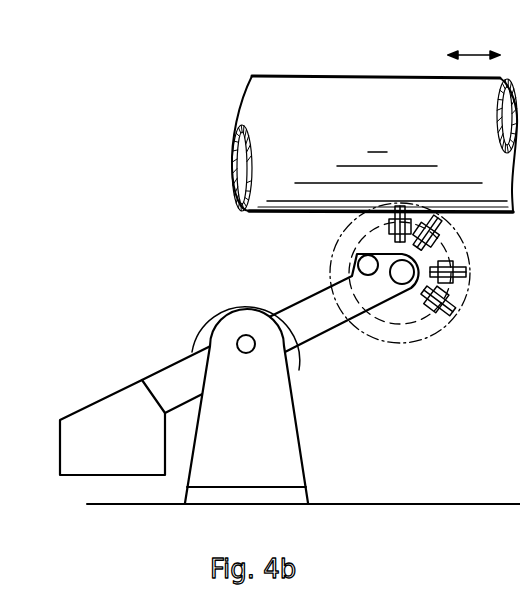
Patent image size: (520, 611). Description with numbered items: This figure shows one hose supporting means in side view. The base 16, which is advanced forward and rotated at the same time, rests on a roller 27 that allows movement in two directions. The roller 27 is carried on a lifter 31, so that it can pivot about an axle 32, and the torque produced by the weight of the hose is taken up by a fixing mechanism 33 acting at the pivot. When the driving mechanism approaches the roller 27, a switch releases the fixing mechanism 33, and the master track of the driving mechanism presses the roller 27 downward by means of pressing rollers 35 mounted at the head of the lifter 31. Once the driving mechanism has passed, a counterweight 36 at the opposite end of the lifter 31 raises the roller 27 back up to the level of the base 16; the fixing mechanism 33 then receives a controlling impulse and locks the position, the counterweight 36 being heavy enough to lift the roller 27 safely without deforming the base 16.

The base 16 is at (260, 115).
The roller 27 is at (448, 320).
The lifter 31 is at (329, 334).
The axle 32 is at (255, 344).
The fixing mechanism 33 is at (220, 303).
The pressing rollers 35 is at (358, 259).
The counterweight 36 is at (110, 408).